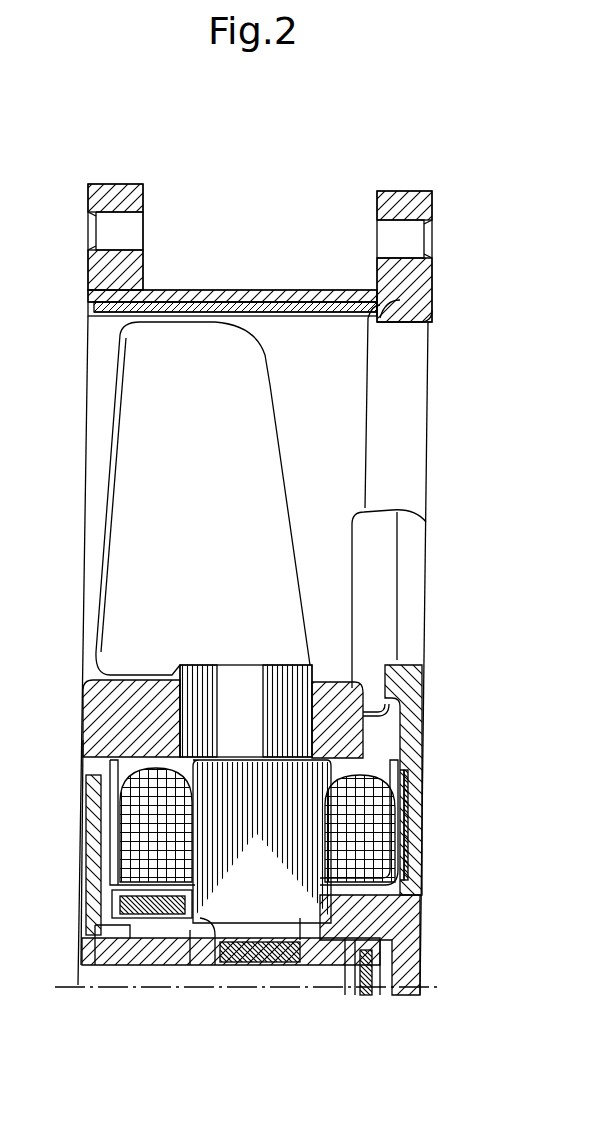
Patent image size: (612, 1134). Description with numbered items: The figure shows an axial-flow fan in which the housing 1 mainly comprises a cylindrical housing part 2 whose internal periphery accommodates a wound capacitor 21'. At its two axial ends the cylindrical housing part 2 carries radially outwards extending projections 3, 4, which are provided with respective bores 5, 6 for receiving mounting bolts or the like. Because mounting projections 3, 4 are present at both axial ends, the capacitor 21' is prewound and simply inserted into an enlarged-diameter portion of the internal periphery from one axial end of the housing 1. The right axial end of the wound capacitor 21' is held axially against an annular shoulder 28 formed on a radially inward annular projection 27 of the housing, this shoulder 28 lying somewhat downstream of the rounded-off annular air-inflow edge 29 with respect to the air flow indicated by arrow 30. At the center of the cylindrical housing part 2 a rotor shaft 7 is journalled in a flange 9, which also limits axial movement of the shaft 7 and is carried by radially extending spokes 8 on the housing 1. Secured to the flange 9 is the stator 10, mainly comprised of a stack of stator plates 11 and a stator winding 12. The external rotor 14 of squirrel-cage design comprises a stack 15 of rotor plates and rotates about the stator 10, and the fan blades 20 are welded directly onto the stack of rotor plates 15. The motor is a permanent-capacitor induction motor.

The housing 1 is at (456, 435).
The cylindrical housing part 2 is at (378, 917).
The projection 3 is at (100, 275).
The projection 4 is at (422, 296).
The bore 5 is at (108, 221).
The bore 6 is at (412, 241).
The rotor shaft 7 is at (89, 975).
The spokes 8 is at (408, 620).
The flange 9 is at (412, 738).
The stator 10 is at (330, 770).
The stator plates 11 is at (308, 808).
The stator winding 12 is at (385, 840).
The rotor 14 is at (108, 703).
The stack of rotor plates 15 is at (197, 670).
The blades 20 is at (133, 428).
The wound capacitor 21' is at (232, 282).
The radially inward annular projection 27 is at (408, 307).
The annular shoulder 28 is at (380, 320).
The rounded-off annular air-inflow edge 29 is at (430, 320).
The arrow 30 is at (456, 487).